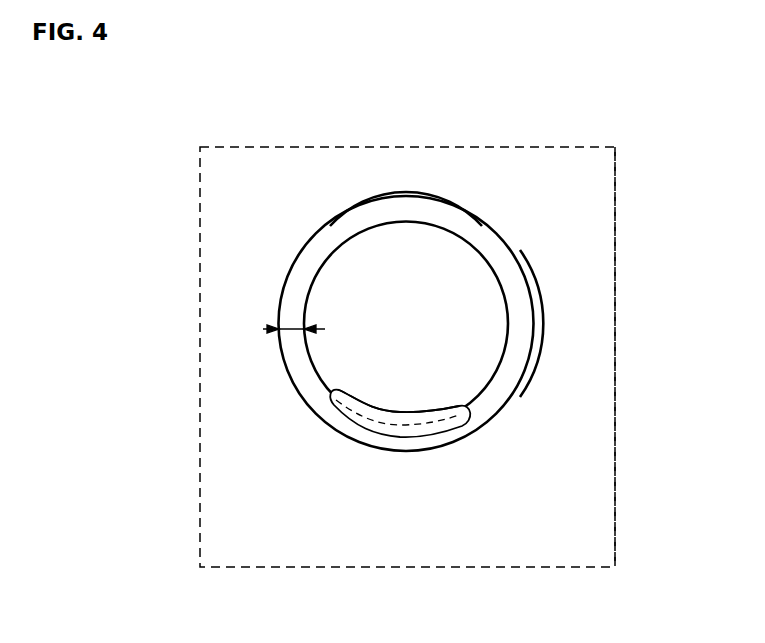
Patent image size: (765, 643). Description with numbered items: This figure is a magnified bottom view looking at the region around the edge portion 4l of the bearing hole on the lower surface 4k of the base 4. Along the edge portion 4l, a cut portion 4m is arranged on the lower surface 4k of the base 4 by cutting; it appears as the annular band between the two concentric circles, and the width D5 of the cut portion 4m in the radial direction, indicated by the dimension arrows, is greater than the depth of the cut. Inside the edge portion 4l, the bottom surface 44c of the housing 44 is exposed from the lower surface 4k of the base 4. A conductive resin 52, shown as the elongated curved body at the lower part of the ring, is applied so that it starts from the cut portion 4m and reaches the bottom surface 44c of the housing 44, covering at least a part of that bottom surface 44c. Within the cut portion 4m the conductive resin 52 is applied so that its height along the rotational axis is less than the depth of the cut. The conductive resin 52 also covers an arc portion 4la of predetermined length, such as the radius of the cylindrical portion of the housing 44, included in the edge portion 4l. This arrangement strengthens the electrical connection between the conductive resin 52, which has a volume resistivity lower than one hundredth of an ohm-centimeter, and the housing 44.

The base 4 is at (597, 203).
The lower surface 4k is at (597, 249).
The edge portion 4l is at (407, 220).
The arc portion 4la is at (375, 411).
The cut portion 4m is at (522, 346).
The housing 44 is at (451, 257).
The bottom surface 44c is at (592, 296).
The conductive resin 52 is at (407, 437).
The width of the cut portion D5 is at (293, 329).